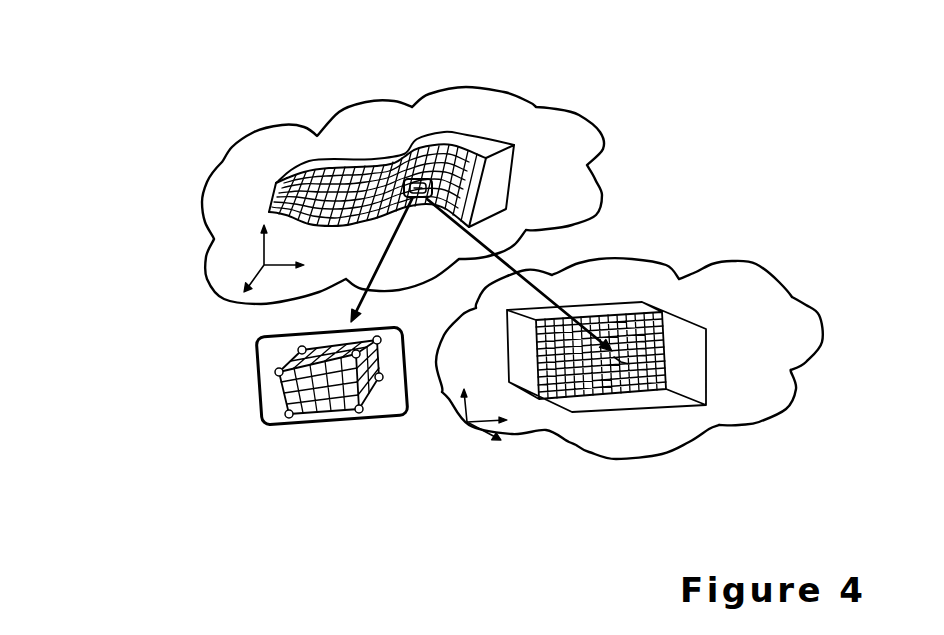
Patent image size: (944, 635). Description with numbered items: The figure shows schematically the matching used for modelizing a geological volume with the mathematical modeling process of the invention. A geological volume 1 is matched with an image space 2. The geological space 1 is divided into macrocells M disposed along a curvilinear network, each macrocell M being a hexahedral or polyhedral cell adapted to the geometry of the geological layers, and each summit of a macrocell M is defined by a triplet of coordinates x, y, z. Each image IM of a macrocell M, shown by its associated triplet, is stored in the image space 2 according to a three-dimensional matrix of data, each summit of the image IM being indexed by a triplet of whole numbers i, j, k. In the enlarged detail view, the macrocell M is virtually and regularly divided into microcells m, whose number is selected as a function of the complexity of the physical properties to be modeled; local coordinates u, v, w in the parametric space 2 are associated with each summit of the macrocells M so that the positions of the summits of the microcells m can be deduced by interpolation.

The geological volume 1 is at (537, 97).
The image space 2 is at (793, 294).
The macrocell M is at (418, 177).
The microcell m is at (290, 392).
The image of macrocell IM is at (627, 349).